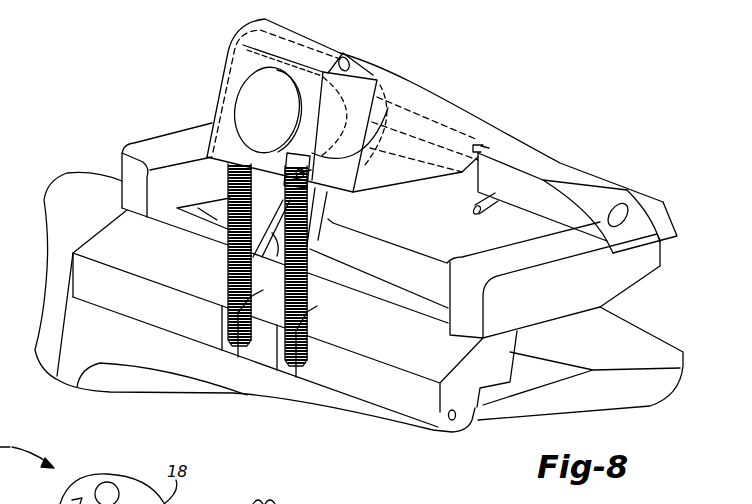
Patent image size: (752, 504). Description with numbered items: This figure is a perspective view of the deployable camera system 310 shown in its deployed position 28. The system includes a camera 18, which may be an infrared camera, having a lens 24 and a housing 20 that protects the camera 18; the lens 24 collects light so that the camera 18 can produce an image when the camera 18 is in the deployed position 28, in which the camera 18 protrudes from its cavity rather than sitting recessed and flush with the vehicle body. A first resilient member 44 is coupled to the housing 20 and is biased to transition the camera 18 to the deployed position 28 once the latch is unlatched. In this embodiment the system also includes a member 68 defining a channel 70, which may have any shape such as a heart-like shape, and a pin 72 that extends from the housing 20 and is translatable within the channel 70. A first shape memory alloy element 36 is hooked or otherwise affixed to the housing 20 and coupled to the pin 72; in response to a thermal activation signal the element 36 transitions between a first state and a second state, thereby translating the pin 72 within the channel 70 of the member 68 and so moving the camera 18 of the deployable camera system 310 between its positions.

The deployable camera system 310 is at (96, 41).
The camera 18 is at (228, 70).
The lens 24 is at (265, 108).
The housing 20 is at (410, 98).
The deployed position 28 is at (579, 90).
The first resilient member 44 is at (482, 140).
The pin 72 is at (360, 193).
The channel 70 is at (326, 207).
The member 68 is at (271, 246).
The first shape memory alloy element 36 is at (228, 268).